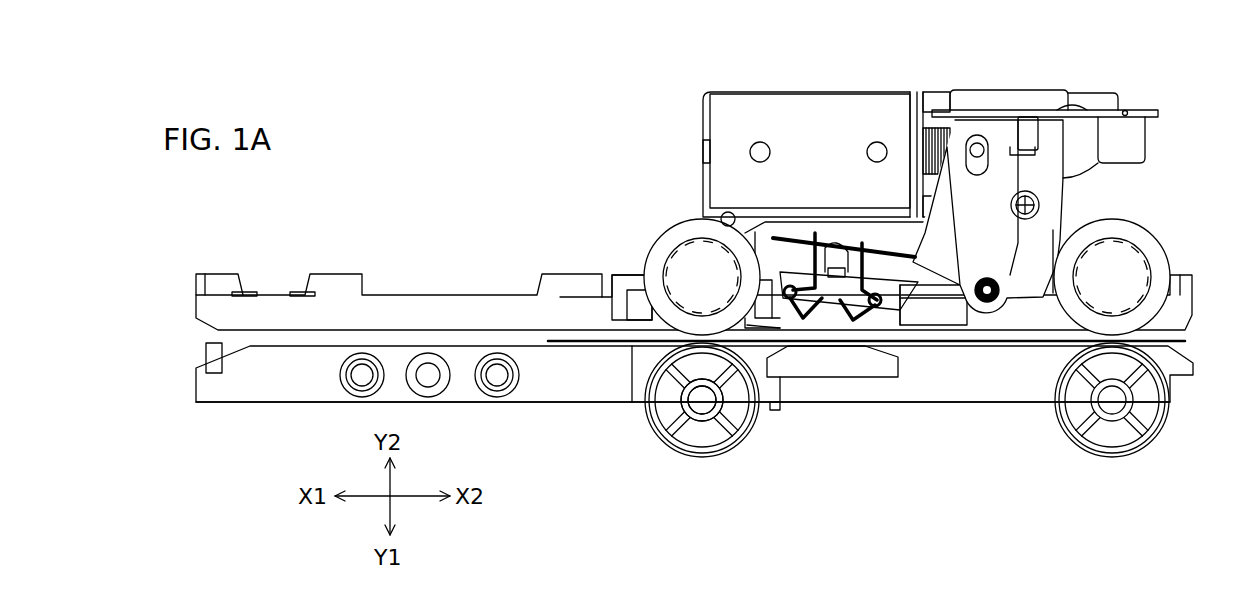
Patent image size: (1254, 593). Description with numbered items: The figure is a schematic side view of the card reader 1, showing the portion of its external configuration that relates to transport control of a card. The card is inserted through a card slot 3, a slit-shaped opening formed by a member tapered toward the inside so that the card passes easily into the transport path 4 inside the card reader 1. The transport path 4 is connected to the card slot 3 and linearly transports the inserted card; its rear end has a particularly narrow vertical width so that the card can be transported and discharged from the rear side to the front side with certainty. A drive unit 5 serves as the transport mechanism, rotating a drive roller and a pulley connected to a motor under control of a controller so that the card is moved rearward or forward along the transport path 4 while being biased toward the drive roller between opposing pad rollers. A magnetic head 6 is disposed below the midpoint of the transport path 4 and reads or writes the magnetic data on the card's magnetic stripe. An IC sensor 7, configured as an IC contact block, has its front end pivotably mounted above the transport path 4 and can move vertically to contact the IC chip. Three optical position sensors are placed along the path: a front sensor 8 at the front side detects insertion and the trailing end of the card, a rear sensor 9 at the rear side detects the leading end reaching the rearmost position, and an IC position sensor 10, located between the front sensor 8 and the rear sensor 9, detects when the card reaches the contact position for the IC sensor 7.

The card reader 1 is at (716, 363).
The card slot 3 is at (1205, 347).
The transport path 4 is at (432, 338).
The drive unit 5 is at (683, 439).
The magnetic head 6 is at (705, 378).
The IC sensor 7 is at (880, 262).
The front sensor 8 is at (1088, 368).
The rear sensor 9 is at (212, 375).
The IC position sensor 10 is at (748, 442).